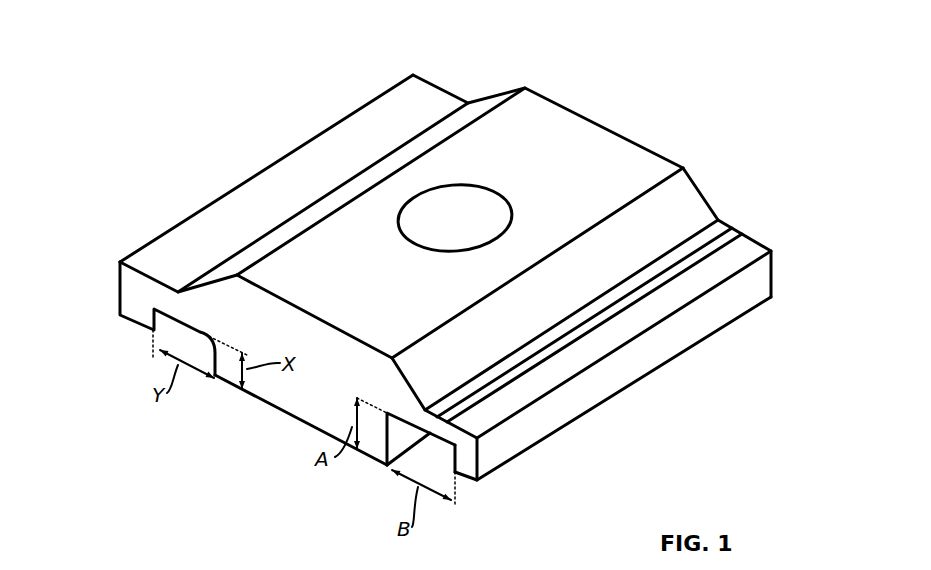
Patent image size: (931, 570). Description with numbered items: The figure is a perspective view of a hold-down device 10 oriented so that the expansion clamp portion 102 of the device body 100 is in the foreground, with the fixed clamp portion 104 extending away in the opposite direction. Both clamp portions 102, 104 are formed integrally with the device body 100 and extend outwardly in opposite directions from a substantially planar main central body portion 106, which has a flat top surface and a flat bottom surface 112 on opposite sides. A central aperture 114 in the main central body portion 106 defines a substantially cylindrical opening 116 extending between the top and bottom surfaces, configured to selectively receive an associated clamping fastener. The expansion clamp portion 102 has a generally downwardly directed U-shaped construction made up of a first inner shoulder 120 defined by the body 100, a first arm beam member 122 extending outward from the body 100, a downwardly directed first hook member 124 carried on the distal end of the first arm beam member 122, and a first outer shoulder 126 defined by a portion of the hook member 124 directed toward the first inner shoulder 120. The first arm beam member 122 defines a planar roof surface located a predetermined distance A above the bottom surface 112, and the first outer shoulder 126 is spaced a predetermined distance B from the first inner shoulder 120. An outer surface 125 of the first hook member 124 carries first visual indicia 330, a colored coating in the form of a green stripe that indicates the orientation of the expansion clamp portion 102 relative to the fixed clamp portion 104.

The hold-down device 10 is at (157, 76).
The device body 100 is at (528, 144).
The expansion clamp portion 102 is at (789, 226).
The fixed clamp portion 104 is at (114, 283).
The main central body portion 106 is at (593, 182).
The bottom surface 112 is at (275, 413).
The central aperture 114 is at (430, 209).
The cylindrical opening 116 is at (457, 218).
The first inner shoulder 120 is at (407, 437).
The first arm beam member 122 is at (480, 437).
The first hook member 124 is at (469, 458).
The outer surface of first hook member 125 is at (463, 475).
The first outer shoulder 126 is at (452, 458).
The first visual indicia 330 is at (714, 312).